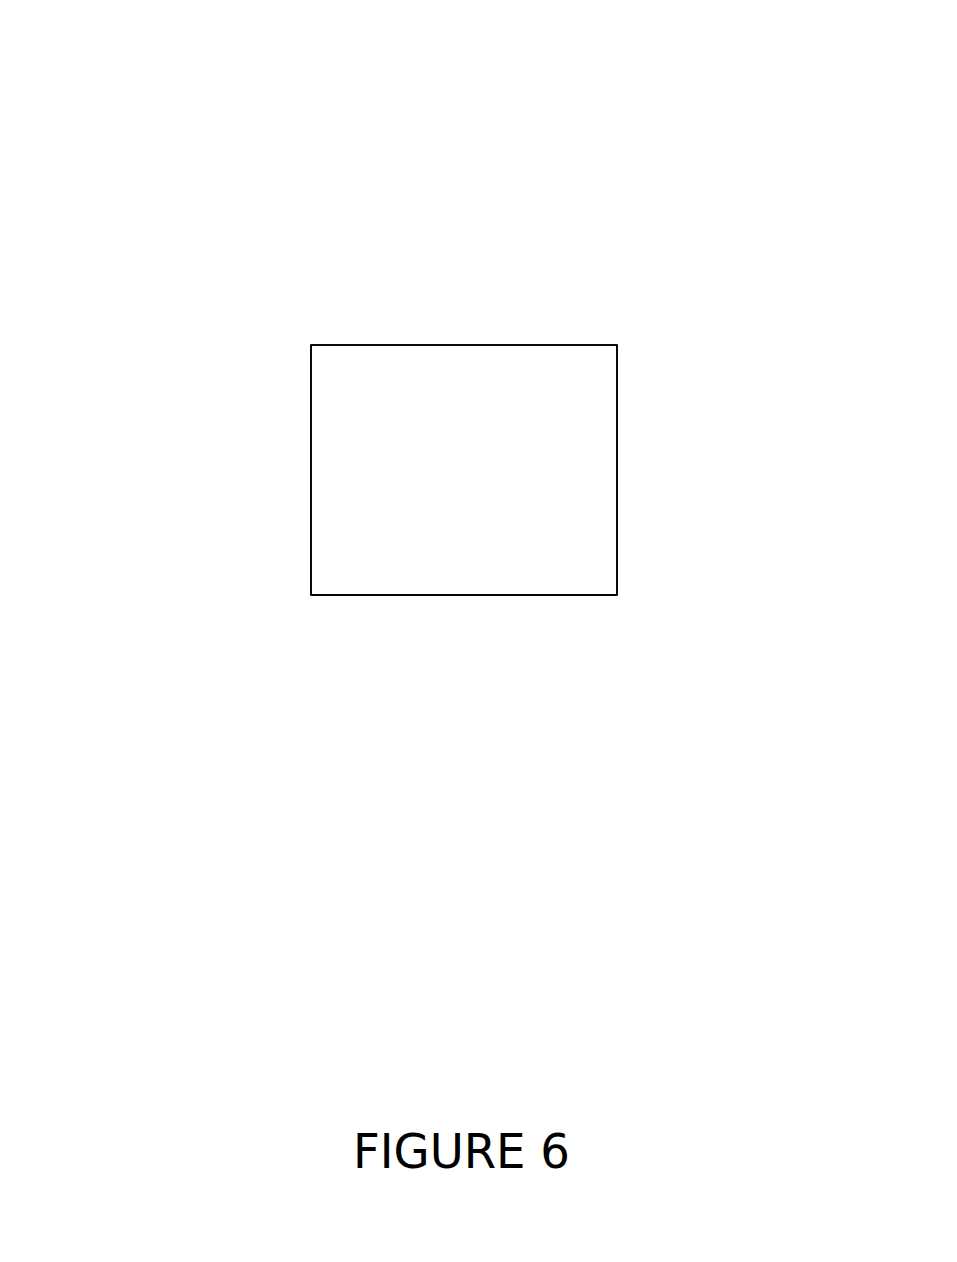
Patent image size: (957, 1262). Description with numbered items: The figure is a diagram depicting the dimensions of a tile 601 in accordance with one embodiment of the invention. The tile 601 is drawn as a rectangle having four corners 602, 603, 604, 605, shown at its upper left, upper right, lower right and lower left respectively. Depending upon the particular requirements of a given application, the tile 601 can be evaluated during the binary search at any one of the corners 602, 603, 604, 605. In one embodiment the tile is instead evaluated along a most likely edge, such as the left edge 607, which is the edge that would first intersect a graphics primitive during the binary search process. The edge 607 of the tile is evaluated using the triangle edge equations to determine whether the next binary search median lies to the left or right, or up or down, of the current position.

The tile 601 is at (62, 36).
The corner 602 is at (302, 345).
The corner 603 is at (630, 343).
The corner 604 is at (629, 605).
The corner 605 is at (302, 606).
The edge 607 is at (300, 488).